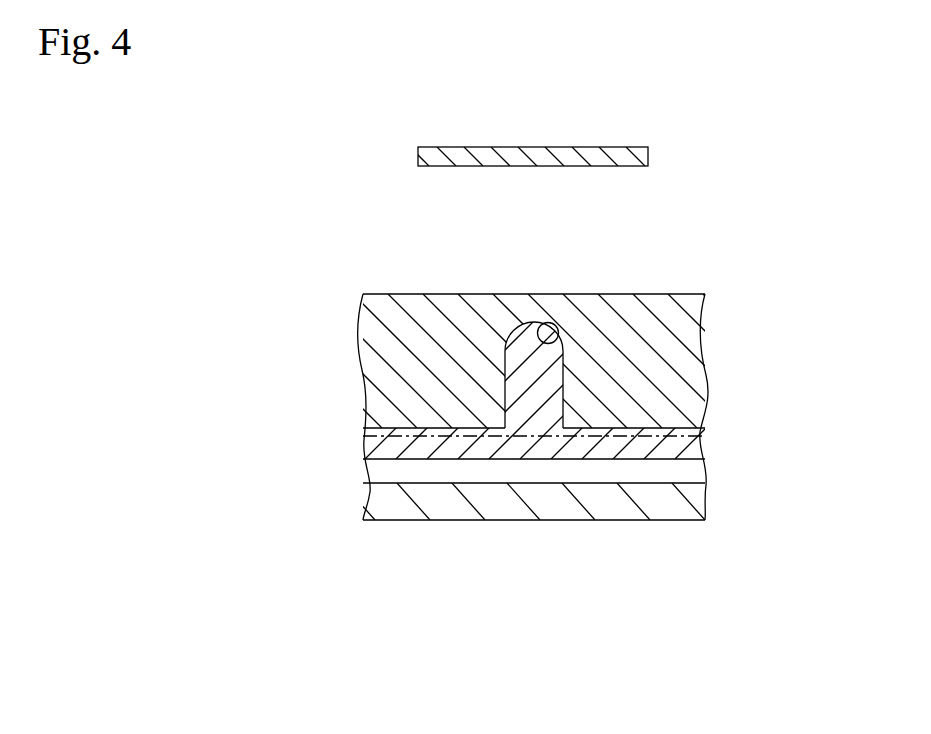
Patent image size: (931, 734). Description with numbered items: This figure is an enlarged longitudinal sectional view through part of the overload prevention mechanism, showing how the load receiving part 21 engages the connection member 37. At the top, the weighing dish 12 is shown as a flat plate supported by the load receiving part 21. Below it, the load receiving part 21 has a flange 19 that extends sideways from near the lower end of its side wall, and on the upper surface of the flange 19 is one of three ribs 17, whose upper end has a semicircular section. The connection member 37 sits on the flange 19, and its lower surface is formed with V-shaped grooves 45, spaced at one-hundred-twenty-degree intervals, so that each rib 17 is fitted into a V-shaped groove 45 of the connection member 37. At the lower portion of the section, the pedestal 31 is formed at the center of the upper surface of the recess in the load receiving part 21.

The weighing dish 12 is at (597, 147).
The rib 17 is at (528, 358).
The flange 19 is at (665, 442).
The load receiving part 21 is at (360, 448).
The pedestal 31 is at (612, 520).
The connection member 37 is at (718, 313).
The V-shaped groove 45 is at (560, 342).